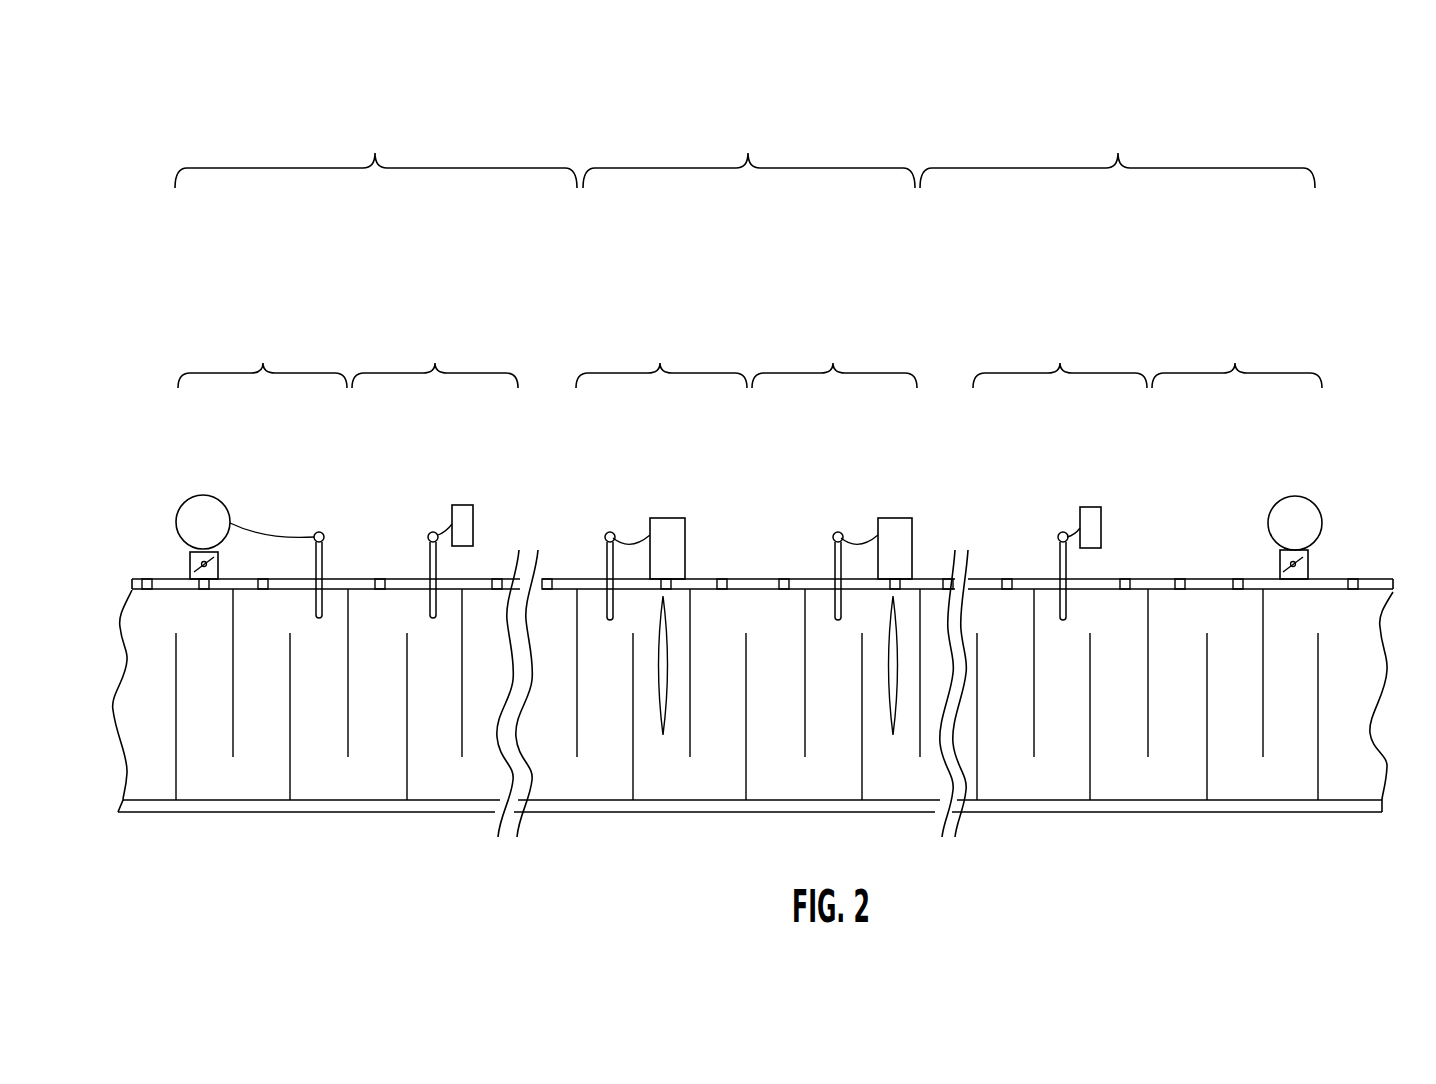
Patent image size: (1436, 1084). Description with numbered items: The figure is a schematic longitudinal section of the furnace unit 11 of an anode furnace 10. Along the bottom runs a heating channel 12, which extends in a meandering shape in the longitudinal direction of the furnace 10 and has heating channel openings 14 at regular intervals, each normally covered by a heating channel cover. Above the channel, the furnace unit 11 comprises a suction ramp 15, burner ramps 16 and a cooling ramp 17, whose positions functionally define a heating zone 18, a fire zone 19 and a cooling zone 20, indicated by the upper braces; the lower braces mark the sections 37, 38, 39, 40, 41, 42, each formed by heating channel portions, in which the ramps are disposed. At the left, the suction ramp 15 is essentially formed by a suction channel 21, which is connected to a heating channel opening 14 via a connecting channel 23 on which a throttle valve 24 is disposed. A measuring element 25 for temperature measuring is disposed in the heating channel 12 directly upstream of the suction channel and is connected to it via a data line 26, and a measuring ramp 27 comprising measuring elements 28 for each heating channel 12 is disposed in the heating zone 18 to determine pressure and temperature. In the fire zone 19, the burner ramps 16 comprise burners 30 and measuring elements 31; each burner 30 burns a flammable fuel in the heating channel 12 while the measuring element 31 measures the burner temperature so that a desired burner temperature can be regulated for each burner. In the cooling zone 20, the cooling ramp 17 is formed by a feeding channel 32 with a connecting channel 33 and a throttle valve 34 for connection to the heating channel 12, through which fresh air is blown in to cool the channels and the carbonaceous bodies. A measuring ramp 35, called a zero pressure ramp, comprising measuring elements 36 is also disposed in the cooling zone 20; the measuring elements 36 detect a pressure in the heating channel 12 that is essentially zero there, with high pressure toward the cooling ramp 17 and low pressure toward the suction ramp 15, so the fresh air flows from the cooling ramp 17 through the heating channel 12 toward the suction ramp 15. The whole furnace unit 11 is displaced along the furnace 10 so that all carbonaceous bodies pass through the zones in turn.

The anode furnace 10 is at (165, 125).
The furnace unit 11 is at (132, 490).
The heating channel 12 is at (1358, 633).
The heating channel opening 14 is at (1124, 578).
The suction ramp 15 is at (190, 497).
The burner ramp 16 is at (640, 528).
The cooling ramp 17 is at (1325, 502).
The heating zone 18 is at (376, 153).
The fire zone 19 is at (749, 153).
The cooling zone 20 is at (1117, 153).
The suction channel 21 is at (200, 513).
The connecting channel 23 is at (192, 553).
The throttle valve 24 is at (204, 567).
The measuring element 25 is at (330, 548).
The data line 26 is at (268, 536).
The measuring ramp 27 is at (447, 520).
The measuring element 28 is at (428, 568).
The burner 30 is at (670, 527).
The measuring element 31 is at (607, 568).
The feeding channel 32 is at (1313, 528).
The connecting channel 33 is at (1305, 572).
The throttle valve 34 is at (1295, 568).
The measuring ramp 35 is at (1072, 520).
The measuring element 36 is at (1060, 572).
The section 37 is at (262, 358).
The section 38 is at (435, 358).
The section 39 is at (661, 358).
The section 40 is at (100, 645).
The section 41 is at (1060, 358).
The section 42 is at (1237, 358).